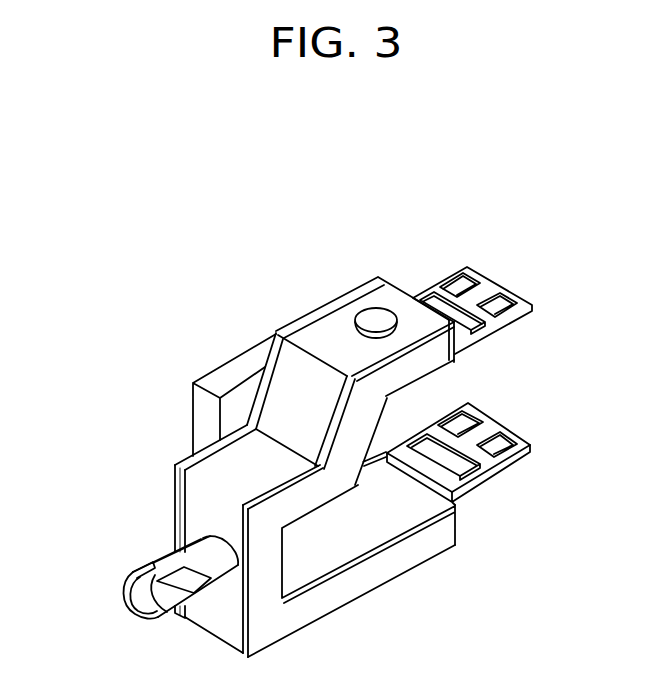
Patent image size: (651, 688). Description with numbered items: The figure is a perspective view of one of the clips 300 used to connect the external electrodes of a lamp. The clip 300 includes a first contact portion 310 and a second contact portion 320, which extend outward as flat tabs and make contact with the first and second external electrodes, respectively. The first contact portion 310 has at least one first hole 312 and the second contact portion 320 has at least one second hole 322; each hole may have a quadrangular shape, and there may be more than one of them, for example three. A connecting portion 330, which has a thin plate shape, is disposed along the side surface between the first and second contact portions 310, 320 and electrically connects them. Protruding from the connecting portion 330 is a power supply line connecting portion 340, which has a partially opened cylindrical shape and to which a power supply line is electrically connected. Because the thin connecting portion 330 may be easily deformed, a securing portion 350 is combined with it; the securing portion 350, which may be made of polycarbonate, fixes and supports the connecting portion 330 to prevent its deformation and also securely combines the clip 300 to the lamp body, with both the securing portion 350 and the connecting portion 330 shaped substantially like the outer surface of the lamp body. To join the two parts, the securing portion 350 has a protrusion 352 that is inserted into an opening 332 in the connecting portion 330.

The clip 300 is at (314, 170).
The first contact portion 310 is at (492, 288).
The first hole 312 is at (462, 288).
The second contact portion 320 is at (492, 425).
The second hole 322 is at (498, 446).
The connecting portion 330 is at (213, 470).
The opening 332 is at (352, 336).
The power supply line connecting portion 340 is at (131, 572).
The securing portion 350 is at (398, 550).
The protrusion 352 is at (376, 315).